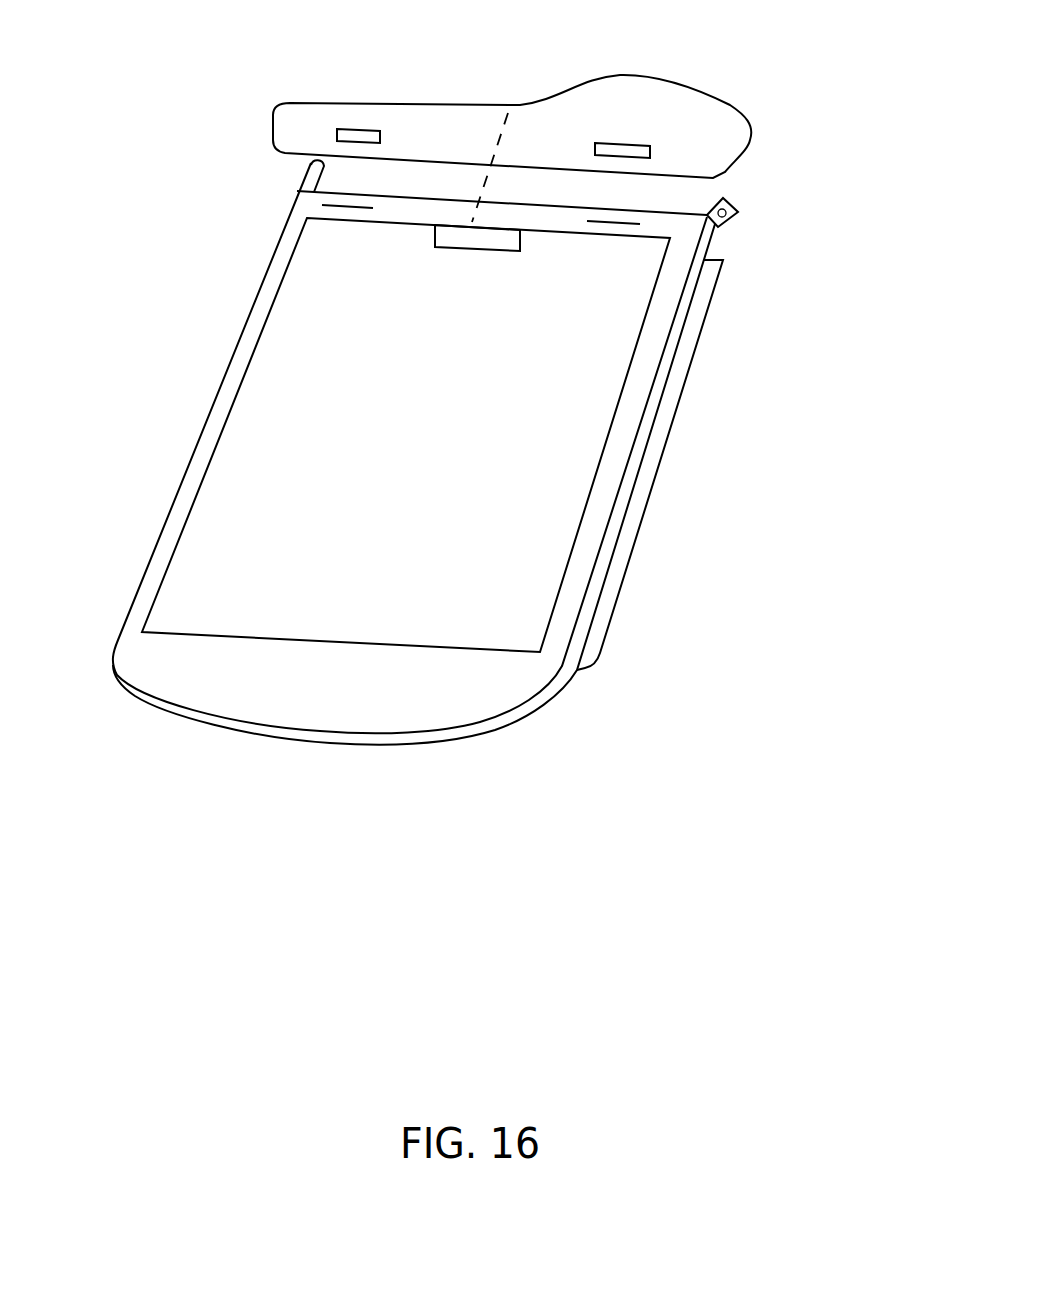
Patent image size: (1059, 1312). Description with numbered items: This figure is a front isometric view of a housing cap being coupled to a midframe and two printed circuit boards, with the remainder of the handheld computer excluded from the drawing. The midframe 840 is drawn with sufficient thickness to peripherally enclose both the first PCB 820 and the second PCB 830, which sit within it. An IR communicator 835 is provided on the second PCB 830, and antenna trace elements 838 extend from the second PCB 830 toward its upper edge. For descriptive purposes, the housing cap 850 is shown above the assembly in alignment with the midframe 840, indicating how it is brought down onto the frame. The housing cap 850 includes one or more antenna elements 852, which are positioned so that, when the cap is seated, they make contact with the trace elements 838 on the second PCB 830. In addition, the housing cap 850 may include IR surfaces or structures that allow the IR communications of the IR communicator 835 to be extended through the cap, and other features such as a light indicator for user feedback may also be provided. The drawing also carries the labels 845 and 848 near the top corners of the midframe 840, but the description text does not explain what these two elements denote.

The first PCB 820 is at (607, 642).
The second PCB 830 is at (406, 435).
The IR communicator 835 is at (473, 240).
The antenna trace elements 838 is at (347, 207).
The midframe 840 is at (320, 733).
The hinge pin 845 is at (735, 212).
The hinge post 848 is at (301, 170).
The housing cap 850 is at (740, 110).
The antenna elements 852 is at (355, 130).